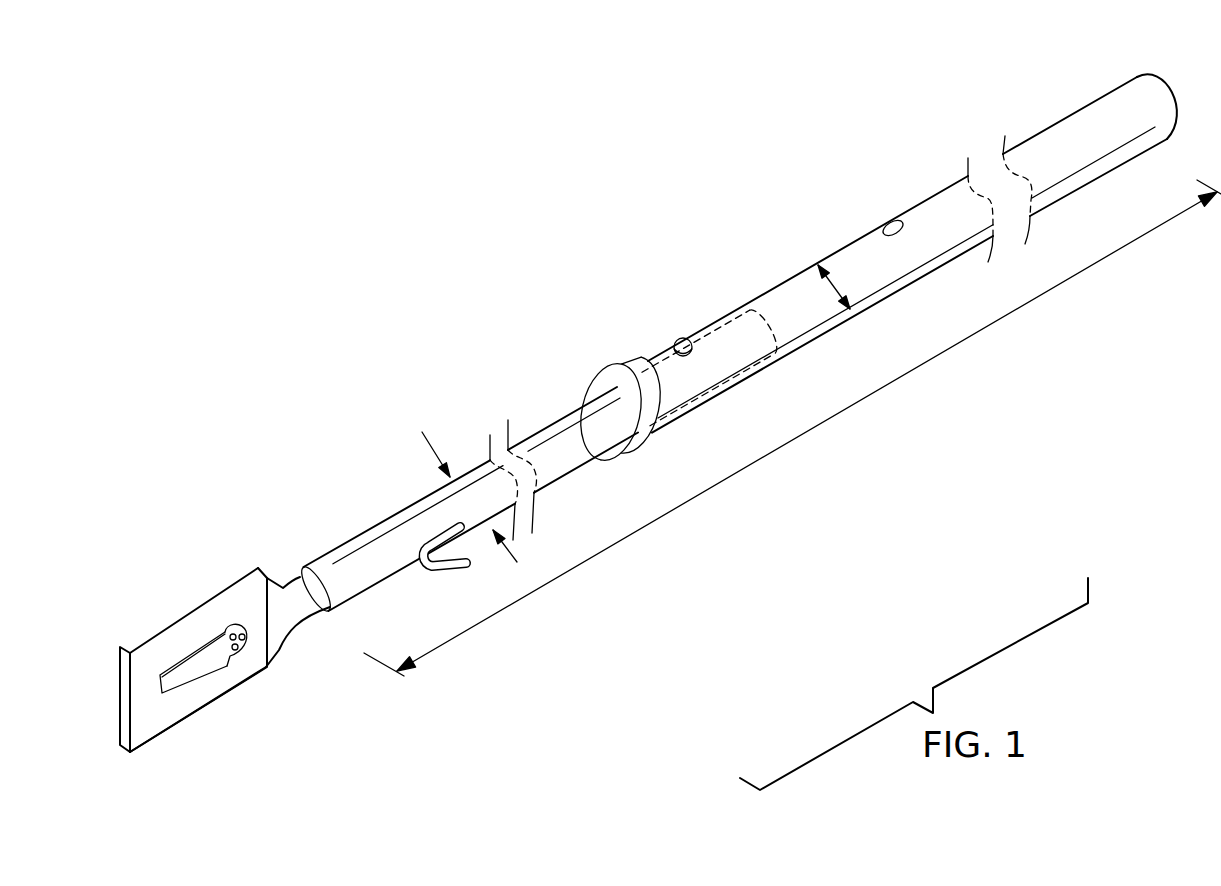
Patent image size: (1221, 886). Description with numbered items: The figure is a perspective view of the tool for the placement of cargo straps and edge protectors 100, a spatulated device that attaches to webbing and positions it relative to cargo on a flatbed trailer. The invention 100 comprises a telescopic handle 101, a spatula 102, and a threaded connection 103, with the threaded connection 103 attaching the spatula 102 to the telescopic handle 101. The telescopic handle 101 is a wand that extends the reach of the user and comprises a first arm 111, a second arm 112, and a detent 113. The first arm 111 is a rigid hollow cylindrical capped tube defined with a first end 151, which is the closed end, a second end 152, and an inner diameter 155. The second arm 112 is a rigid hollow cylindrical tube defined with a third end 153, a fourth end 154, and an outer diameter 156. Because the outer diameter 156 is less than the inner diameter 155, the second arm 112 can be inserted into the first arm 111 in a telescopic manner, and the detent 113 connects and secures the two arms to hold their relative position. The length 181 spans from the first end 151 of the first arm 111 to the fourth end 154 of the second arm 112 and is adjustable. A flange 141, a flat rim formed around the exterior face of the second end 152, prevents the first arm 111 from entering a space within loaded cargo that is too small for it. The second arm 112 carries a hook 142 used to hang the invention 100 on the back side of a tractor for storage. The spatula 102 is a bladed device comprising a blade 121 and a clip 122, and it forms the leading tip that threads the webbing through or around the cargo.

The tool for the placement of cargo straps and edge protectors 100 is at (297, 412).
The telescopic handle 101 is at (1037, 131).
The spatula 102 is at (190, 718).
The threaded connection 103 is at (300, 563).
The first arm 111 is at (841, 248).
The second arm 112 is at (556, 425).
The detent 113 is at (681, 338).
The blade 121 is at (229, 613).
The clip 122 is at (217, 665).
The flange 141 is at (637, 459).
The hook 142 is at (440, 569).
The first end 151 is at (1172, 97).
The second end 152 is at (628, 366).
The third end 153 is at (779, 328).
The fourth end 154 is at (303, 567).
The inner diameter 155 is at (842, 297).
The outer diameter 156 is at (450, 481).
The length 181 is at (792, 428).